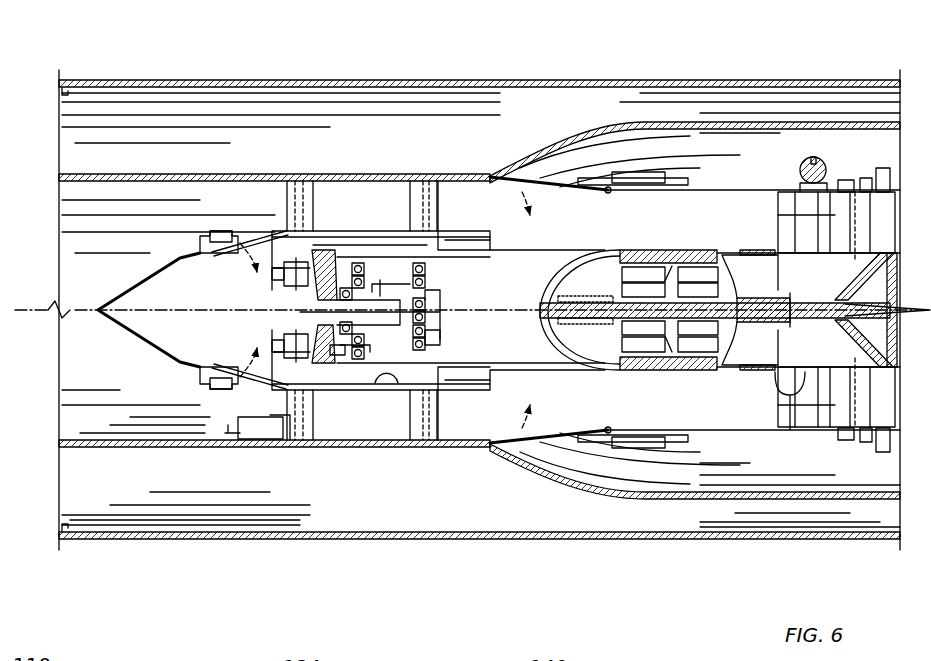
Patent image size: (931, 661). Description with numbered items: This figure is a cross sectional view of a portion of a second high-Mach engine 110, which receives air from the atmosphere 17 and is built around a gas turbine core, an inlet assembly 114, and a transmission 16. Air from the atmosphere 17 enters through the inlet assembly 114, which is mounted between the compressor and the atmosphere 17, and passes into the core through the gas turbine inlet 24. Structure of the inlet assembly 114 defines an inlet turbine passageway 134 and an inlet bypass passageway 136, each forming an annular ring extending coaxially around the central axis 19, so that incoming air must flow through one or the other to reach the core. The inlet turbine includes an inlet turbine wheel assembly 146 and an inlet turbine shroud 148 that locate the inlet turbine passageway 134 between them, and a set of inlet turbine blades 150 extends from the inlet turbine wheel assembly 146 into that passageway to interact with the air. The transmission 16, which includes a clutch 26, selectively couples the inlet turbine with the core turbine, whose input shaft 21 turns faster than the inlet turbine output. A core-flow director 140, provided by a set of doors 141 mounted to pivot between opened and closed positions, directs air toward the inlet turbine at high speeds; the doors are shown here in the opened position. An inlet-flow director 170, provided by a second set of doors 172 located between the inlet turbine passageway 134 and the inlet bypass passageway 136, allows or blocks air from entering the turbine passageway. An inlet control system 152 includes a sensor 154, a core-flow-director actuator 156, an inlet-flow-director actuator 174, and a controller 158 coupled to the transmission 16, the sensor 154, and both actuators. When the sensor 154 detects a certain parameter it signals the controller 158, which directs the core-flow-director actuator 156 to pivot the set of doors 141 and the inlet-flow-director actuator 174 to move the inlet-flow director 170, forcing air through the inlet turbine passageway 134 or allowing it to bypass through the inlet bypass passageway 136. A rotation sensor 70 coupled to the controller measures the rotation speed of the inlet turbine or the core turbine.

The high-Mach engine 110 is at (88, 70).
The atmosphere 17 is at (33, 222).
The central axis 19 is at (25, 305).
The rotation sensor 70 is at (300, 325).
The inlet-flow director 170 is at (219, 220).
The set of doors 172 is at (262, 232).
The inlet-flow-director actuator 174 is at (224, 390).
The transmission 16 is at (343, 268).
The inlet turbine passageway 134 is at (380, 245).
The inlet assembly 114 is at (370, 223).
The inlet bypass passageway 136 is at (397, 213).
The clutch 26 is at (397, 262).
The input shaft 21 is at (493, 305).
The core-flow director 140 is at (563, 173).
The set of doors 141 is at (573, 185).
The gas turbine inlet 24 is at (747, 216).
The inlet control system 152 is at (617, 585).
The sensor 154 is at (226, 431).
The controller 158 is at (258, 438).
The set of inlet turbine blades 150 is at (330, 367).
The inlet turbine wheel assembly 146 is at (348, 355).
The inlet turbine shroud 148 is at (402, 386).
The core-flow-director actuator 156 is at (640, 448).